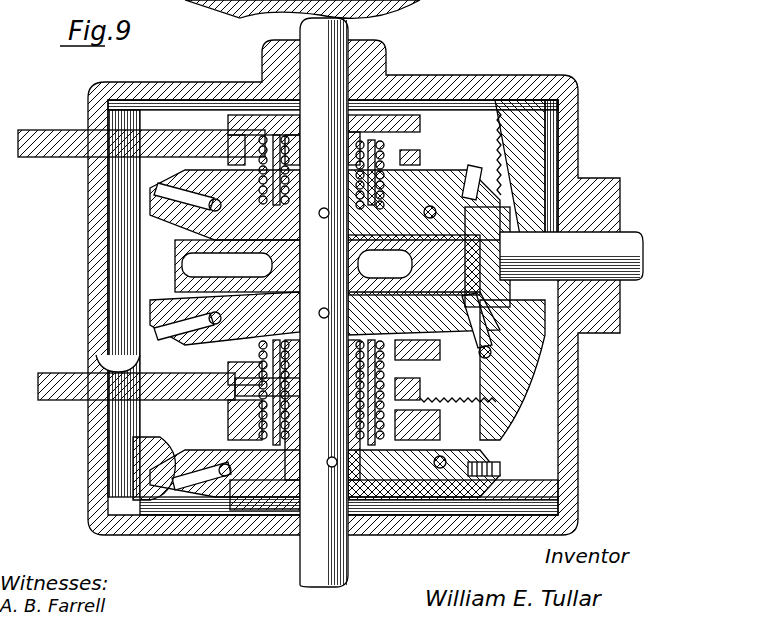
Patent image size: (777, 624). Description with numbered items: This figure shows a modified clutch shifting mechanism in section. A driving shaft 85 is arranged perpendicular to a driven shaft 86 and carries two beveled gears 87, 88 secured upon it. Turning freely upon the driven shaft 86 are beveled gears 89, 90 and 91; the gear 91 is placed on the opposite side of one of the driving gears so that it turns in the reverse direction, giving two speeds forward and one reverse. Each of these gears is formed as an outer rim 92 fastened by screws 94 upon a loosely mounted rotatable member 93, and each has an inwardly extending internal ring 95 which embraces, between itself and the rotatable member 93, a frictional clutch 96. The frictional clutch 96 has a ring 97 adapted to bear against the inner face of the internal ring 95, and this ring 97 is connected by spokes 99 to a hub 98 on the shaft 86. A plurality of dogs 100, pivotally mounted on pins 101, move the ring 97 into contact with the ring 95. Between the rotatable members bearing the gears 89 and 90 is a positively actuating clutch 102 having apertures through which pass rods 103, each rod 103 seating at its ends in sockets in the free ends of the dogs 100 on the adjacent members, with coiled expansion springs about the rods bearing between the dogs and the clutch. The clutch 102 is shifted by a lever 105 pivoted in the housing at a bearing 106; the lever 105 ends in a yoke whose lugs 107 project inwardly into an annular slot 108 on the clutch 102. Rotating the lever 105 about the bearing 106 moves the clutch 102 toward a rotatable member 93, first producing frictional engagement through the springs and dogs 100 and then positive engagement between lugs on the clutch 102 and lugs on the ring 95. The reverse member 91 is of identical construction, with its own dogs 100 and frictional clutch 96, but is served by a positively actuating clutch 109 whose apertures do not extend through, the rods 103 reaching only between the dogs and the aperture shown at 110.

The driving shaft 85 is at (625, 242).
The driven shaft 86 is at (335, 70).
The beveled gear 87 is at (548, 130).
The beveled gear 88 is at (552, 175).
The beveled gear 89 is at (503, 440).
The beveled gear 90 is at (460, 256).
The beveled gear 91 is at (442, 187).
The outer rim 92 is at (485, 487).
The rotatable member 93 is at (450, 490).
The screws 94 is at (500, 470).
The internal ring 95 is at (215, 192).
The frictional clutch 96 is at (413, 572).
The ring 97 is at (440, 190).
The hub 98 is at (352, 565).
The spokes 99 is at (270, 510).
The dogs 100 is at (187, 258).
The pins 101 is at (462, 243).
The positively actuating clutch 102 is at (240, 388).
The pin or rod 103 is at (292, 358).
The lever 105 is at (56, 380).
The bearing 106 is at (105, 365).
The lugs 107 is at (290, 380).
The annular slot 108 is at (248, 430).
The positively actuating clutch 109 is at (270, 130).
The aperture 110 is at (290, 125).